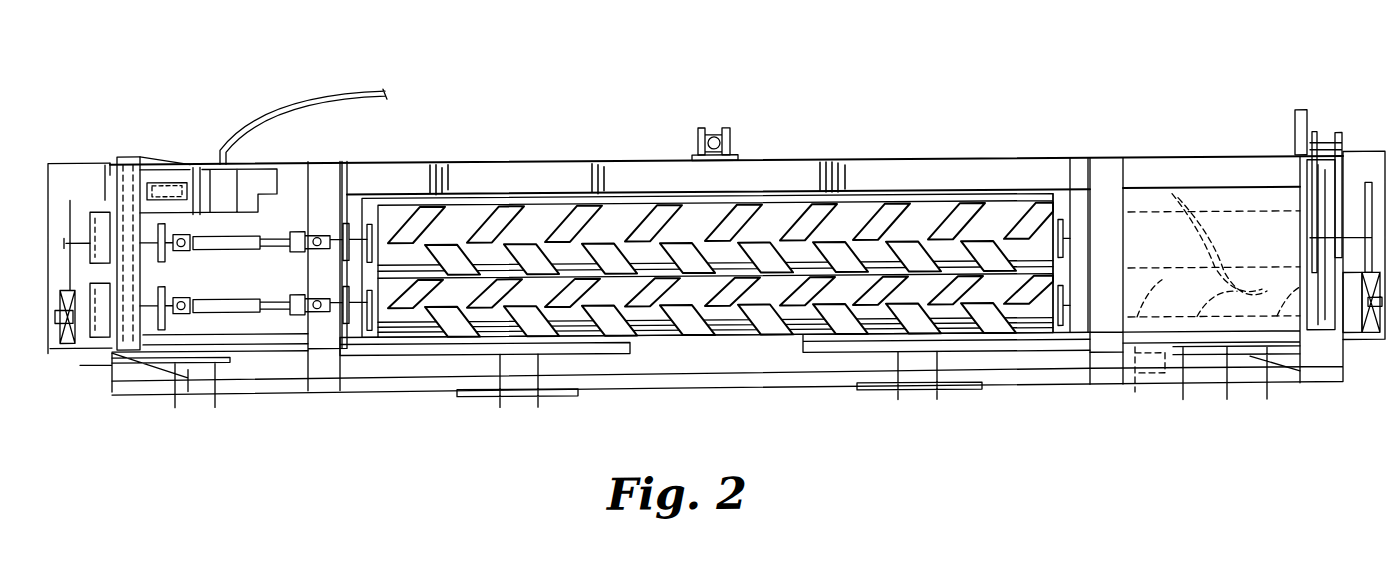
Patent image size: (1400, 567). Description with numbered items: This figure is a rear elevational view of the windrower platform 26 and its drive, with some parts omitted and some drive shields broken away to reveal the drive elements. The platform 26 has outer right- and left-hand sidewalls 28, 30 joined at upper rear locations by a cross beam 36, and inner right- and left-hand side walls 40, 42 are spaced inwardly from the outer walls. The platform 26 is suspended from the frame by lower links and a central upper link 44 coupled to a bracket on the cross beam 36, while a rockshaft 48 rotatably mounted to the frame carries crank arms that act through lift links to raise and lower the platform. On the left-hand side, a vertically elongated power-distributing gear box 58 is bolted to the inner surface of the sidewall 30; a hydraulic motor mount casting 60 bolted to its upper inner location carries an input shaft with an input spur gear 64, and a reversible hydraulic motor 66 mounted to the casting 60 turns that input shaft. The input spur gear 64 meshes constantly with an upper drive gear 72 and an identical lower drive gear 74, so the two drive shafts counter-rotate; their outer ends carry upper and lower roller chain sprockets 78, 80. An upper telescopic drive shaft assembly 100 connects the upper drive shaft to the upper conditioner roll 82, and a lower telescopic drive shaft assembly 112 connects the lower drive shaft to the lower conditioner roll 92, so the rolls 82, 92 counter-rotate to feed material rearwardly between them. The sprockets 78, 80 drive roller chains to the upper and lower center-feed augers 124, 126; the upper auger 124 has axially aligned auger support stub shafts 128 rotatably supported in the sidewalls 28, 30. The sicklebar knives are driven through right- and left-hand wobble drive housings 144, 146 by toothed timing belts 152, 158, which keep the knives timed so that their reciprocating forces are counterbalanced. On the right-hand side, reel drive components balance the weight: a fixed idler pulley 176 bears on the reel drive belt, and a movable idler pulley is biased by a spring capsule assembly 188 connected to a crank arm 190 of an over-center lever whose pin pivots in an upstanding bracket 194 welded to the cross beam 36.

The platform 26 is at (620, 106).
The right-hand sidewall 28 is at (1310, 328).
The left-hand sidewall 30 is at (105, 168).
The cross beam 36 is at (814, 161).
The inner right-hand side wall 40 is at (1055, 192).
The inner left-hand side wall 42 is at (373, 198).
The upper link 44 is at (713, 137).
The rockshaft 48 is at (735, 140).
The gear box 58 is at (128, 153).
The hydraulic motor mount casting 60 is at (163, 163).
The input spur gear 64 is at (140, 180).
The hydraulic motor 66 is at (243, 167).
The upper drive gear 72 is at (143, 265).
The lower drive gear 74 is at (118, 364).
The upper roller chain sprocket 78 is at (95, 162).
The lower roller chain sprocket 80 is at (82, 373).
The upper conditioner roll 82 is at (652, 203).
The lower conditioner roll 92 is at (713, 342).
The upper telescopic drive shaft assembly 100 is at (230, 253).
The lower telescopic drive shaft assembly 112 is at (247, 314).
The upper center-feed auger 124 is at (1180, 202).
The lower center-feed auger 126 is at (1135, 360).
The auger support stub shaft 128 is at (1377, 330).
The right-hand drive housing 144 is at (1342, 322).
The left-hand drive housing 146 is at (68, 346).
The toothed belt 152 is at (1370, 183).
The toothed belt 158 is at (72, 205).
The fixed idler pulley 176 is at (1318, 130).
The spring capsule assembly 188 is at (1335, 140).
The crank arm 190 is at (1300, 198).
The upstanding bracket 194 is at (1295, 117).